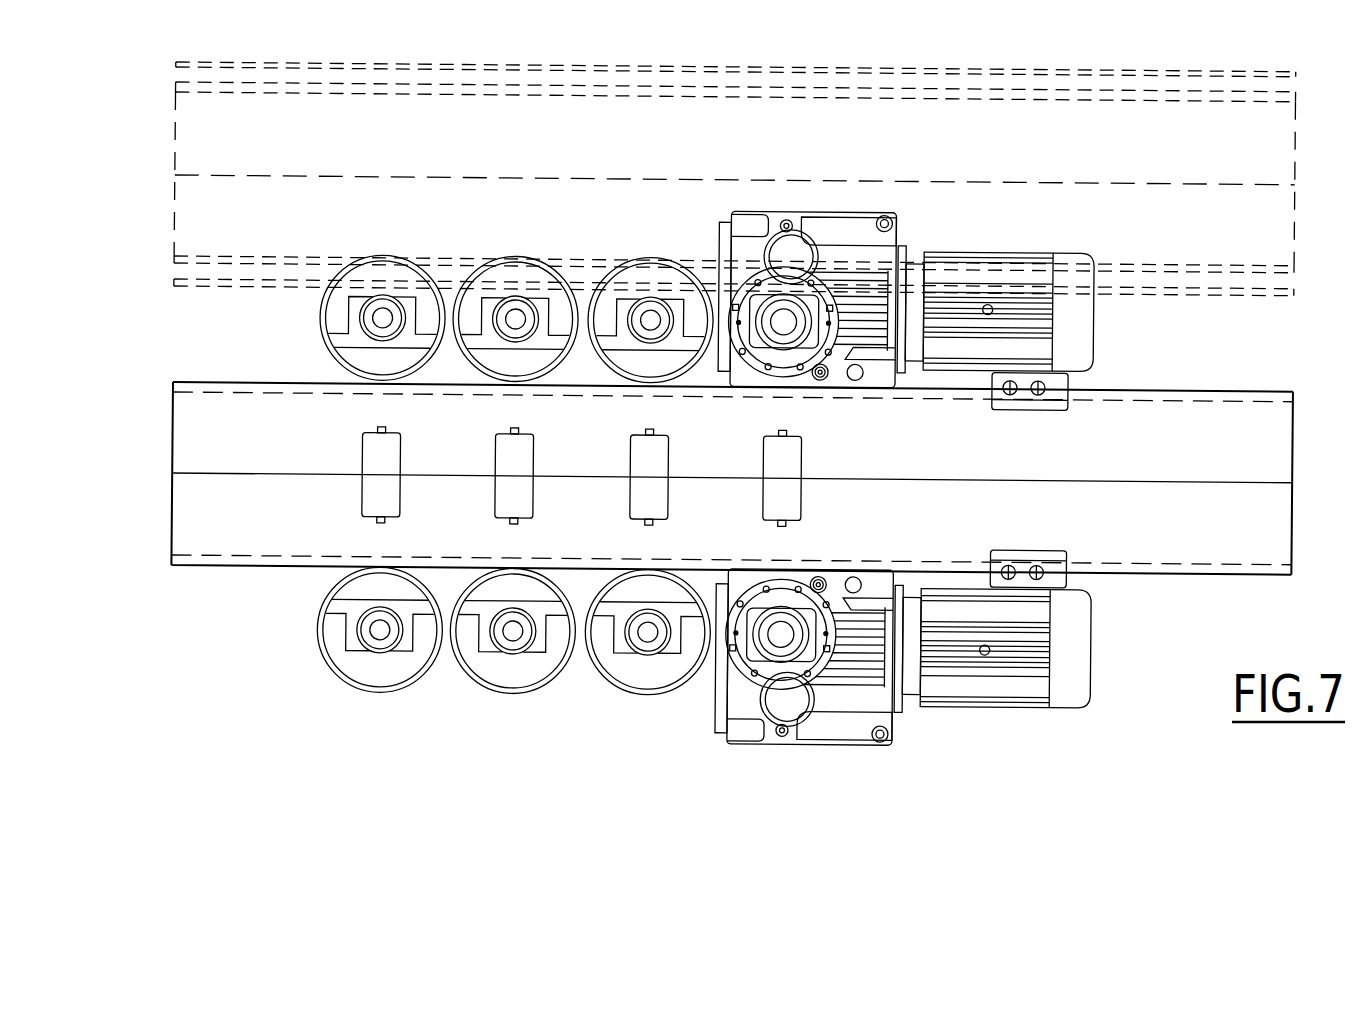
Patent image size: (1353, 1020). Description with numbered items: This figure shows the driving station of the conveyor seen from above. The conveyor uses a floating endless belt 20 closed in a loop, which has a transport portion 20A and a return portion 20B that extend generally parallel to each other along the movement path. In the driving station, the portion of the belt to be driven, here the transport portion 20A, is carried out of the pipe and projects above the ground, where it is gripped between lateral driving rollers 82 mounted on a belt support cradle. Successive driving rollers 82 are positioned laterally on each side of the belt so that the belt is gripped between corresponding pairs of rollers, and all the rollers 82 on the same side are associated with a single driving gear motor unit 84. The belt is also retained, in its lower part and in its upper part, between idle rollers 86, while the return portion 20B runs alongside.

The floating endless belt 20 is at (240, 568).
The transport portion 20A is at (202, 511).
The return portion 20B is at (193, 216).
The lateral driving rollers 82 is at (493, 280).
The driving gear motor unit 84 is at (828, 222).
The idle rollers 86 is at (375, 452).